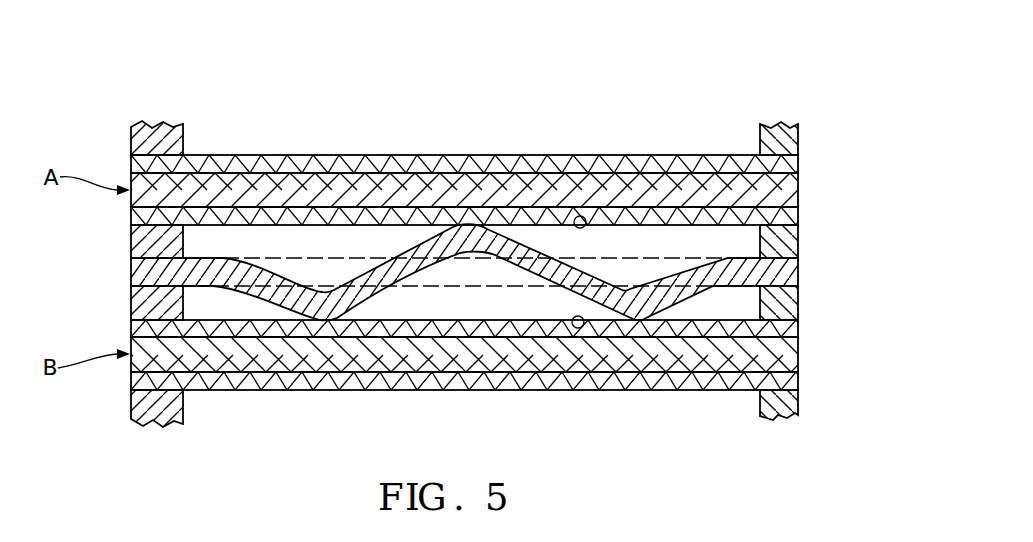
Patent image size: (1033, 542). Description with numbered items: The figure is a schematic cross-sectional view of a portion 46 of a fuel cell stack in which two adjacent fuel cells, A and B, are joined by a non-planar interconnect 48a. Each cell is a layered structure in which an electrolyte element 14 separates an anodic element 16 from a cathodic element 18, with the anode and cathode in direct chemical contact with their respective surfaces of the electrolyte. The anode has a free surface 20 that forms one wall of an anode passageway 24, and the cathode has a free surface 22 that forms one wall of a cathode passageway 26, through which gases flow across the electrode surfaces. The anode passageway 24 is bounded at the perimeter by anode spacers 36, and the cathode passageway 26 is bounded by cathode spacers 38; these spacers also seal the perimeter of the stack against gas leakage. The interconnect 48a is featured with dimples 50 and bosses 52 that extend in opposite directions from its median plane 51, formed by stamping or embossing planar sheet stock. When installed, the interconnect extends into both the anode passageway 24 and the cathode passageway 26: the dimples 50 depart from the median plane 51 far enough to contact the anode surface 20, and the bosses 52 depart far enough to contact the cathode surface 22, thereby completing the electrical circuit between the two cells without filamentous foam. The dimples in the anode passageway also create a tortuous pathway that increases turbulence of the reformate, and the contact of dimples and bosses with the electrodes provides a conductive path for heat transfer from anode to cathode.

The portion of fuel cell stack 46 is at (667, 90).
The anode spacer 36 is at (799, 136).
The cathode spacer 38 is at (798, 240).
The anodic element 16 is at (799, 164).
The electrolyte element 14 is at (798, 184).
The cathodic element 18 is at (755, 218).
The first interconnect 48a is at (798, 278).
The cathode passageway 26 is at (312, 248).
The boss 52 is at (462, 226).
The cathode free surface 22 is at (584, 216).
The anode free surface 20 is at (582, 328).
The dimple 50 is at (330, 305).
The median plane 51 is at (482, 275).
The anode passageway 24 is at (435, 298).